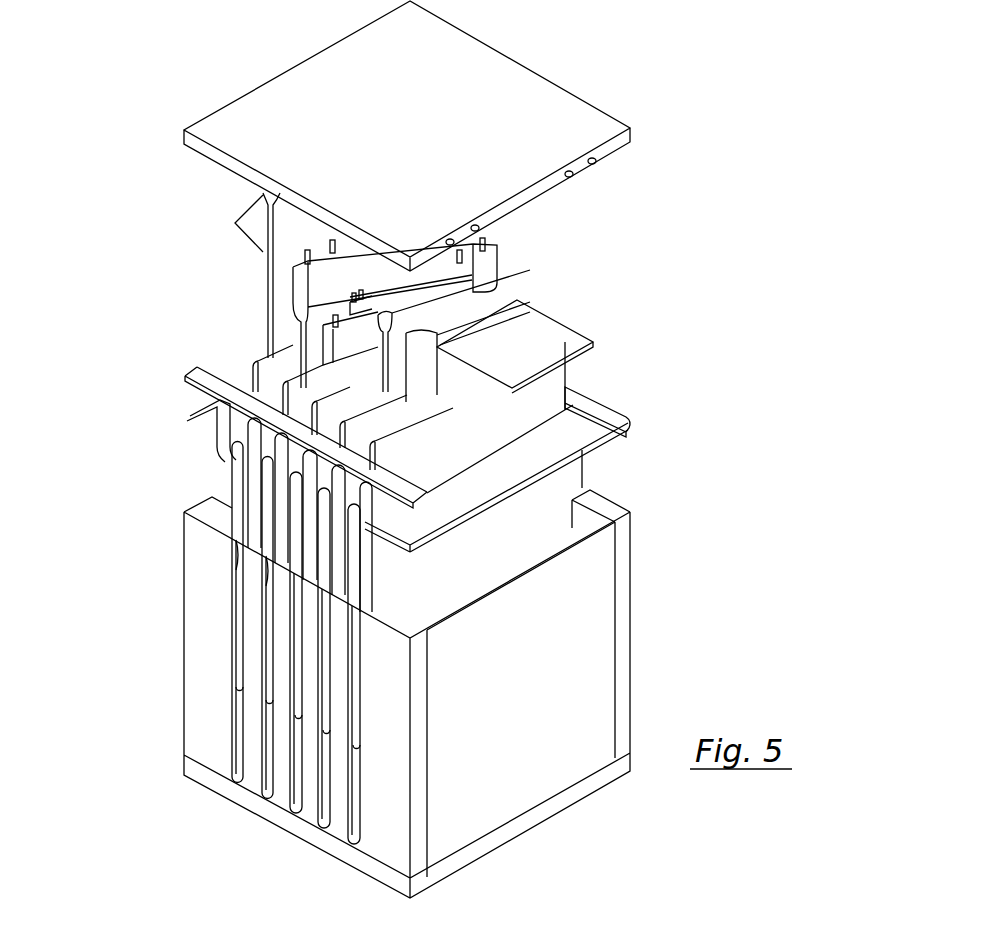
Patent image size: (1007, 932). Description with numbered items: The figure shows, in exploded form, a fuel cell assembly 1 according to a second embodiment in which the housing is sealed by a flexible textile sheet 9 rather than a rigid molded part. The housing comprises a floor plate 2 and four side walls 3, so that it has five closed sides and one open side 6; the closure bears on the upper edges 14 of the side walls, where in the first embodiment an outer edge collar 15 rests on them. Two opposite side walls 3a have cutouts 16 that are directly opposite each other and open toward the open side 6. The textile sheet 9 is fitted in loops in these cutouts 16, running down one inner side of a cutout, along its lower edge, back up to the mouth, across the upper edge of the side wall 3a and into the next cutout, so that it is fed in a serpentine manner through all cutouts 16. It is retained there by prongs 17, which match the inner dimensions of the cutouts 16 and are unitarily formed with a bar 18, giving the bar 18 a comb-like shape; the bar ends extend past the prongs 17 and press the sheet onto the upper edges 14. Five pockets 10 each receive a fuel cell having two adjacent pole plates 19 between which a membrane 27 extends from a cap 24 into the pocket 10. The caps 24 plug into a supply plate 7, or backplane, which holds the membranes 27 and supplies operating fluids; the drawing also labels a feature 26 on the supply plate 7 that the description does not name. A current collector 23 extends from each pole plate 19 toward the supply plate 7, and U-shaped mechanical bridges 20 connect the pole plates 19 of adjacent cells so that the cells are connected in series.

The fuel cell assembly 1 is at (803, 153).
The floor plate 2 is at (547, 810).
The side walls 3 is at (565, 668).
The opposite side walls 3a is at (202, 640).
The open side 6 is at (497, 562).
The supply plate 7 is at (575, 127).
The textile sheet 9 is at (562, 485).
The pocket 10 is at (265, 598).
The upper edges 14 is at (590, 525).
The outer edge collar 15 is at (575, 432).
The cutouts 16 is at (268, 750).
The prongs 17 is at (237, 430).
The bar 18 is at (205, 380).
The pole plates 19 is at (540, 387).
The mechanical bridge 20 is at (480, 302).
The current collector 23 is at (245, 224).
The cap 24 is at (487, 258).
The hole 26 is at (597, 162).
The membrane 27 is at (310, 342).